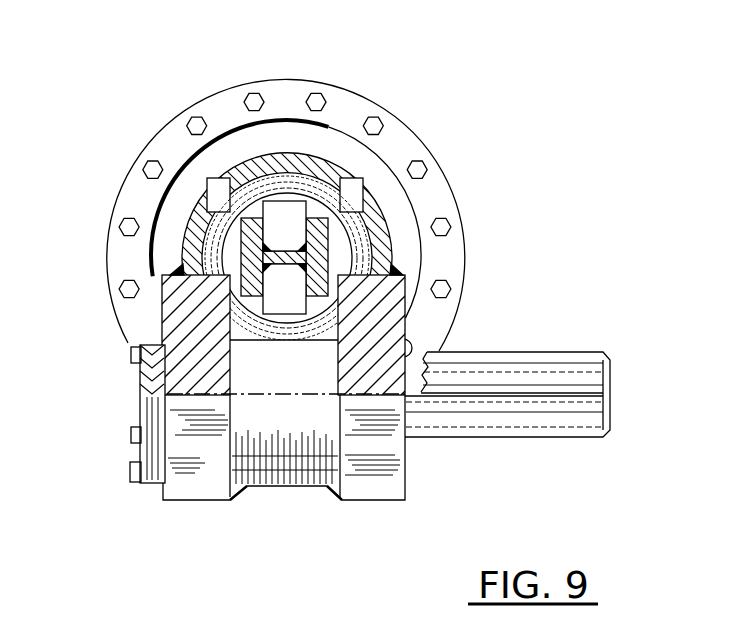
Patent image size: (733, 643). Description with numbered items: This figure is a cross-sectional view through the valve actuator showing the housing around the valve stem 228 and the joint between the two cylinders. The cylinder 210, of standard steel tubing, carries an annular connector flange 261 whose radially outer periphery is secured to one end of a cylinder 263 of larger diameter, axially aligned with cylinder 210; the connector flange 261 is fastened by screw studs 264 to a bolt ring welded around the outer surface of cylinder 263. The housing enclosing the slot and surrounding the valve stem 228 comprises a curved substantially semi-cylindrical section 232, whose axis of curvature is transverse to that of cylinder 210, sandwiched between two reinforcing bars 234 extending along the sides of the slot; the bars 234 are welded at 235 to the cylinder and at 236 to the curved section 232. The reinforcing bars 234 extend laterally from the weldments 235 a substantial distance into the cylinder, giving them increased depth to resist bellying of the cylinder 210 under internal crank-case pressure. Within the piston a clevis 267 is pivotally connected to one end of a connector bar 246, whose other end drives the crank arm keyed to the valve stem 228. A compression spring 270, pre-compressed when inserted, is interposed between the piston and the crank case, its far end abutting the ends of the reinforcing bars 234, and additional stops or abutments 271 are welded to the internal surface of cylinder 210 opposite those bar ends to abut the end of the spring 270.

The cylinder 210 is at (206, 170).
The valve stem 228 is at (552, 418).
The curved substantially semi-cylindrical section 232 is at (286, 488).
The reinforcing bars 234 is at (172, 316).
The weldments 235 is at (176, 270).
The welds 236 is at (233, 484).
The connector bar 246 is at (318, 256).
The annular connector flange 261 is at (343, 95).
The cylinder 263 is at (264, 190).
The screw studs 264 is at (128, 218).
The clevis 267 is at (273, 211).
The compression spring 270 is at (315, 188).
The stops or abutments 271 is at (348, 203).